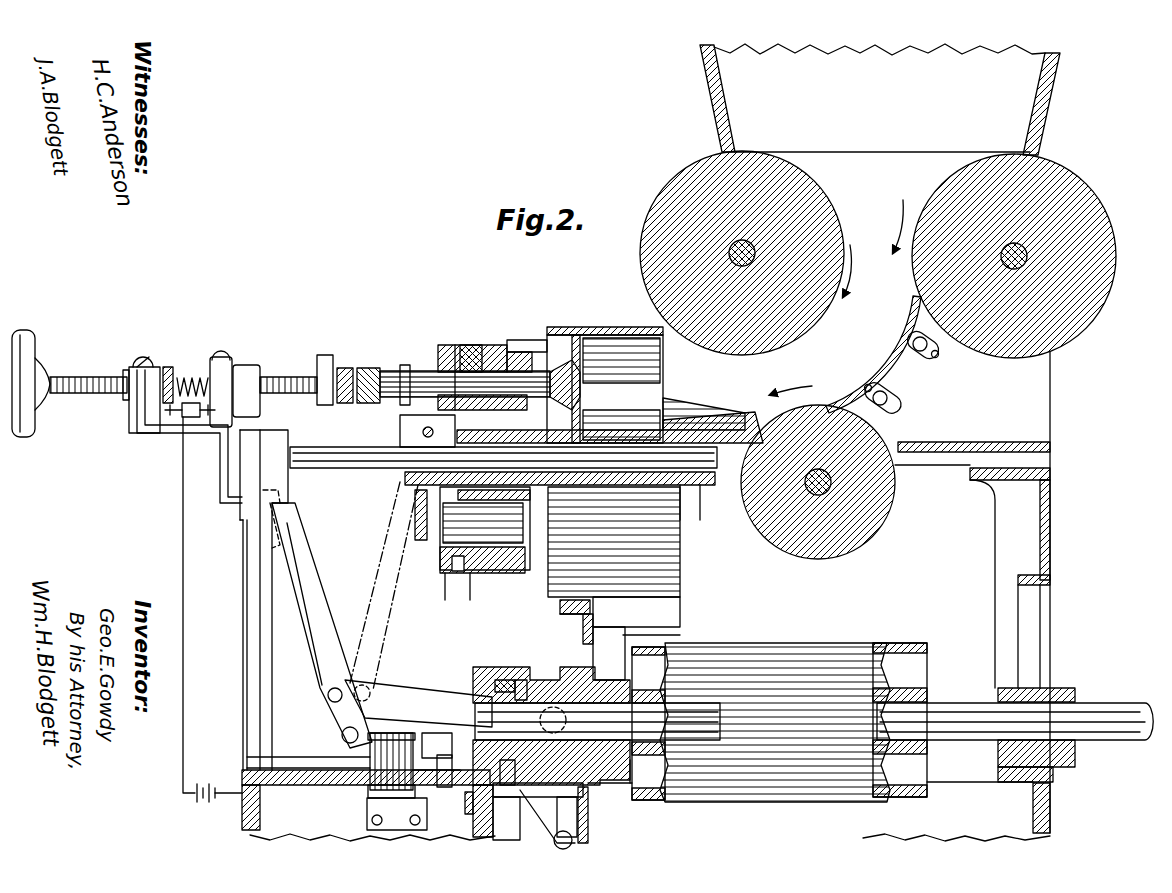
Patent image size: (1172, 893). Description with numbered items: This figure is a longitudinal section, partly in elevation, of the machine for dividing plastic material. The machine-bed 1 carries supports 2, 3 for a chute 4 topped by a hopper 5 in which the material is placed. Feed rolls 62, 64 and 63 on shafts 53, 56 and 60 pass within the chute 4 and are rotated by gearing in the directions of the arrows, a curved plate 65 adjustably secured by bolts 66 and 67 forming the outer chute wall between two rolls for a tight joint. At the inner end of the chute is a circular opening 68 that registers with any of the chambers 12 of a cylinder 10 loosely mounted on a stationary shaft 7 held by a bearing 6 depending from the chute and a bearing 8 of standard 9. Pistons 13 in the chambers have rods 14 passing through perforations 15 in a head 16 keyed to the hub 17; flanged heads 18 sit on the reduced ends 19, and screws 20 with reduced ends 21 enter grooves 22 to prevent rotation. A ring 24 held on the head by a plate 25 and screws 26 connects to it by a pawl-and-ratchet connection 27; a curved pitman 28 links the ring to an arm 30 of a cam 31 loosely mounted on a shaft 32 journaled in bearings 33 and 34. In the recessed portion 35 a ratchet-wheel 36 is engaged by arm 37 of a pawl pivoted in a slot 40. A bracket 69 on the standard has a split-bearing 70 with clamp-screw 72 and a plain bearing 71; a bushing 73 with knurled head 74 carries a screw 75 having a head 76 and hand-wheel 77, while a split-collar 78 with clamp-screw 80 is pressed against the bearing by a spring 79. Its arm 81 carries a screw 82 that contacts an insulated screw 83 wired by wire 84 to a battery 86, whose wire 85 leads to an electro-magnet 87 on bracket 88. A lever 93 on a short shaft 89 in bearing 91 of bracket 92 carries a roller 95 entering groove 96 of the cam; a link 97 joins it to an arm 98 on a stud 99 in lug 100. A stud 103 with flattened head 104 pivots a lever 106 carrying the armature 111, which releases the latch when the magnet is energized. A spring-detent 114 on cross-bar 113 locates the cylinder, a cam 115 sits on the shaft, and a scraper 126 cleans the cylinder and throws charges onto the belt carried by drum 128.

The machine-bed 1 is at (956, 811).
The support 2 is at (609, 653).
The support 3 is at (972, 592).
The chute 4 is at (824, 294).
The hopper 5 is at (880, 99).
The bearing 6 is at (698, 487).
The stationary shaft 7 is at (356, 470).
The bearing 8 is at (264, 600).
The standard 9 is at (365, 652).
The cylinder 10 is at (600, 327).
The chambers 12 is at (605, 389).
The pistons 13 is at (570, 350).
The rods 14 is at (405, 365).
The perforations 15 is at (460, 345).
The head 16 is at (485, 530).
The hub 17 is at (457, 393).
The flanged heads 18 is at (345, 368).
The reduced ends 19 is at (385, 371).
The screws 20 is at (515, 345).
The reduced ends 21 is at (530, 367).
The grooves 22 is at (466, 345).
The ring 24 is at (472, 575).
The plate 25 is at (450, 380).
The screws 26 is at (448, 575).
The pawl-and-ratchet connection 27 is at (460, 571).
The curved pitman 28 is at (465, 800).
The arm 30 is at (497, 815).
The cam 31 is at (508, 682).
The shaft 32 is at (540, 715).
The bearing 33 is at (612, 785).
The bearing 34 is at (1060, 690).
The recessed portion 35 is at (560, 606).
The ratchet-wheel 36 is at (522, 682).
The arm 37 is at (585, 812).
The slot 40 is at (520, 785).
The shaft 53 is at (753, 250).
The shaft 56 is at (833, 483).
The shaft 60 is at (1025, 256).
The roll 62 is at (703, 187).
The roll 63 is at (948, 203).
The roll 64 is at (827, 407).
The curved plate 65 is at (887, 352).
The bolt 66 is at (888, 398).
The bolt 67 is at (925, 352).
The circular opening 68 is at (704, 401).
The bracket 69 is at (228, 450).
The split-bearing 70 is at (143, 362).
The plain bearing 71 is at (250, 366).
The clamp-screw 72 is at (140, 362).
The bushing 73 is at (125, 375).
The knurled head 74 is at (170, 367).
The screw 75 is at (90, 393).
The head 76 is at (326, 355).
The hand-wheel 77 is at (28, 437).
The split-collar 78 is at (220, 357).
The spring 79 is at (186, 376).
The clamp-screw 80 is at (223, 362).
The arm 81 is at (200, 412).
The screw 82 is at (210, 416).
The screw 83 is at (195, 418).
The wire 84 is at (183, 565).
The wire 85 is at (285, 795).
The battery 86 is at (219, 780).
The electro-magnet 87 is at (375, 762).
The bracket 88 is at (397, 814).
The short shaft 89 is at (572, 843).
The bearing 91 is at (577, 830).
The bracket 92 is at (545, 825).
The lever 93 is at (620, 722).
The roller 95 is at (665, 695).
The groove 96 is at (551, 746).
The link 97 is at (418, 703).
The arm 98 is at (305, 600).
The stud 99 is at (337, 721).
The lug 100 is at (370, 690).
The stud 103 is at (458, 760).
The flattened head 104 is at (406, 765).
The lever 106 is at (445, 755).
The armature 111 is at (440, 733).
The cross-bar 113 is at (680, 635).
The spring-detent 114 is at (583, 626).
The cam 115 is at (415, 533).
The scraper 126 is at (680, 585).
The drum 128 is at (775, 722).